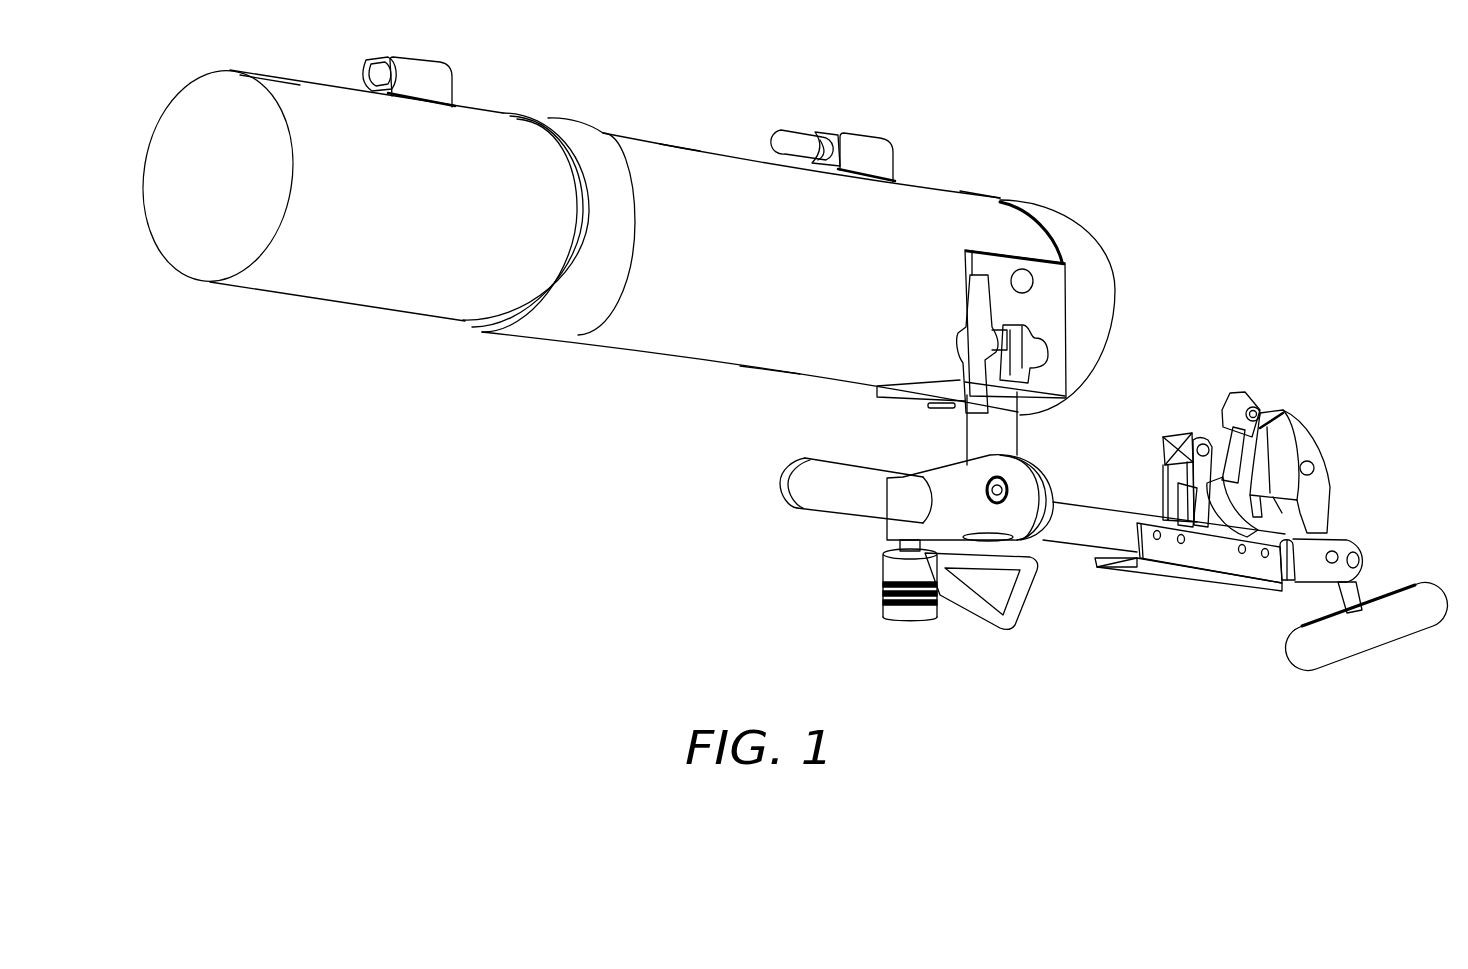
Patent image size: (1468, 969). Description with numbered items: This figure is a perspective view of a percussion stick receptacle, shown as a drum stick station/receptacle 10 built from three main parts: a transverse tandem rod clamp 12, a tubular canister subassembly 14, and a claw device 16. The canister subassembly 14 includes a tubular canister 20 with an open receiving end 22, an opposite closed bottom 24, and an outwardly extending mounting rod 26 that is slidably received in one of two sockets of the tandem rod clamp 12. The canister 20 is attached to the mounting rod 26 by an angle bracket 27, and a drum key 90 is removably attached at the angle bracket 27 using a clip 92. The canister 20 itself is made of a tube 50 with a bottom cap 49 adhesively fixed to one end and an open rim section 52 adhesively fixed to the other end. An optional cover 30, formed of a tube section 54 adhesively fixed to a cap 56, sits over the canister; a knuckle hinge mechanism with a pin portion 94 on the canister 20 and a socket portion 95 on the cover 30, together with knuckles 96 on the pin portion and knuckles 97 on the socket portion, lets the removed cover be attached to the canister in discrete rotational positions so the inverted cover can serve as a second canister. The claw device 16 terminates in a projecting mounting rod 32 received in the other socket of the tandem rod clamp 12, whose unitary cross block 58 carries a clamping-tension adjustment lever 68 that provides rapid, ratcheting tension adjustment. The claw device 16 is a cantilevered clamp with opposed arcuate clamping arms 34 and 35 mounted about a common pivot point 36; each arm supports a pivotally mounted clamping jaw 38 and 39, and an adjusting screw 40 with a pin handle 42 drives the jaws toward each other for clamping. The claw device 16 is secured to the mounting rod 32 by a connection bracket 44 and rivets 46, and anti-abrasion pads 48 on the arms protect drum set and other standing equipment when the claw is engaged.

The drum stick station/receptacle 10 is at (1005, 151).
The transverse tandem rod clamp 12 is at (870, 549).
The tubular canister subassembly 14 is at (658, 132).
The claw device 16 is at (1276, 522).
The tubular canister 20 is at (763, 379).
The open receiving end 22 is at (602, 283).
The closed bottom 24 is at (1023, 232).
The mounting rod 26 is at (1007, 437).
The angle bracket 27 is at (1058, 370).
The cover 30 is at (372, 311).
The mounting rod 32 is at (835, 500).
The clamping arm 34 is at (1318, 461).
The clamping arm 35 is at (1170, 502).
The common pivot point 36 is at (1290, 587).
The clamping jaw 38 is at (1233, 398).
The clamping jaw 39 is at (1172, 433).
The adjusting screw 40 is at (1370, 556).
The pin handle 42 is at (1310, 652).
The connection bracket 44 is at (1212, 566).
The rivets 46 is at (1182, 546).
The anti-abrasion pads 48 is at (1233, 476).
The bottom cap 49 is at (1090, 250).
The tube 50 is at (771, 265).
The open rim section 52 is at (553, 332).
The tube section 54 is at (446, 213).
The cap 56 is at (202, 243).
The cross block 58 is at (974, 507).
The clamping-tension adjustment lever 68 is at (911, 623).
The drum key 90 is at (984, 410).
The clip 92 is at (1020, 335).
The pin portion 94 is at (872, 150).
The socket portion 95 is at (418, 66).
The knuckles 96 is at (836, 135).
The knuckles 97 is at (376, 57).